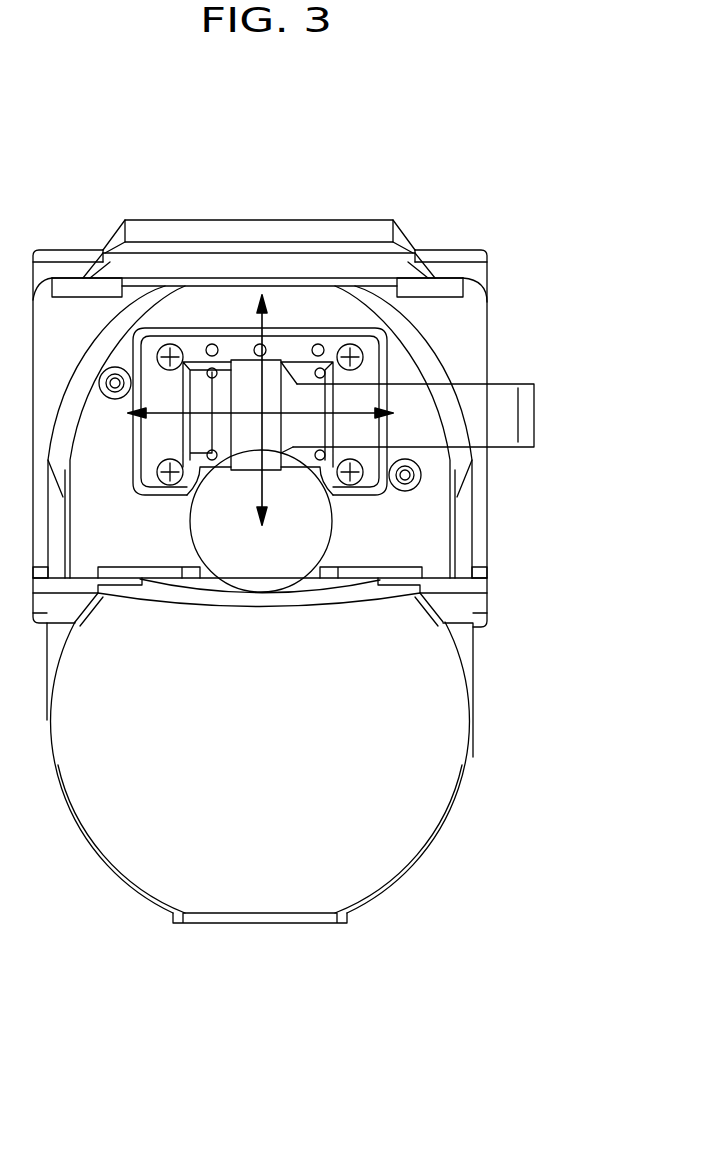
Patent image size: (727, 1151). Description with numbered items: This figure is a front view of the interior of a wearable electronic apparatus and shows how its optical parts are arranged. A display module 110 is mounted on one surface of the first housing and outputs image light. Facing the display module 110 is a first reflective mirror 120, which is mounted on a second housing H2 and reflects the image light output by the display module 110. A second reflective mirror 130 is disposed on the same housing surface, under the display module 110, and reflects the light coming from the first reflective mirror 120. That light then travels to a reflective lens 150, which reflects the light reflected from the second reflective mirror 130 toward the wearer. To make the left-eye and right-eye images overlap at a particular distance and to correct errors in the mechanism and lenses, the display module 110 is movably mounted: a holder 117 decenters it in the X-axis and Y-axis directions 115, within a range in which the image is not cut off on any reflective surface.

The display module 110 is at (220, 382).
The second housing H2 is at (328, 233).
The first reflective mirror 120 is at (430, 352).
The holder 117 is at (507, 447).
The X-axis and Y-axis directions 115 is at (262, 487).
The second reflective mirror 130 is at (263, 555).
The reflective lens 150 is at (417, 775).